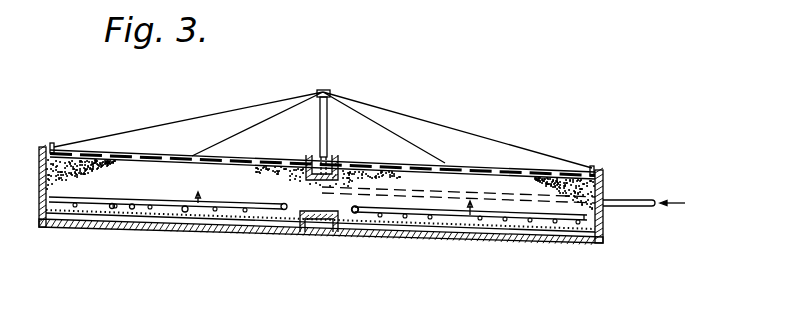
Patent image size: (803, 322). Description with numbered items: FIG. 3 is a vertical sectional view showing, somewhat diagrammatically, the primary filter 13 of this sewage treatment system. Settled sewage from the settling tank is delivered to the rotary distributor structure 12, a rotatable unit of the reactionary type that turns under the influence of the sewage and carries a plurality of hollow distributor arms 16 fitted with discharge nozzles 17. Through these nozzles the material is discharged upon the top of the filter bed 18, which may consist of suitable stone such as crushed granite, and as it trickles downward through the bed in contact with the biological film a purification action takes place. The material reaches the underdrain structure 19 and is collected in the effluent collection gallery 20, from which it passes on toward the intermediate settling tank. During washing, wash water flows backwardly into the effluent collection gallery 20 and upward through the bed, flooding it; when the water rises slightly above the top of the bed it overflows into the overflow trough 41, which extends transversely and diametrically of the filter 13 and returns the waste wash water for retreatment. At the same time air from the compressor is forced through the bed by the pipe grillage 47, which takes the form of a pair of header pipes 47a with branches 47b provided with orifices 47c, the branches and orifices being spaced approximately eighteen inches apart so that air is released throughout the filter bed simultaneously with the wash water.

The rotary distributor structure 12 is at (318, 125).
The primary filter 13 is at (605, 181).
The hollow distributor arms 16 is at (512, 169).
The discharge nozzles 17 is at (568, 168).
The filter bed 18 is at (352, 168).
The underdrain structure 19 is at (257, 223).
The effluent collection gallery 20 is at (323, 233).
The overflow trough 41 is at (327, 158).
The pipe grillage 47 is at (108, 190).
The header pipes 47a is at (350, 208).
The branches 47b is at (182, 206).
The orifices 47c is at (132, 209).